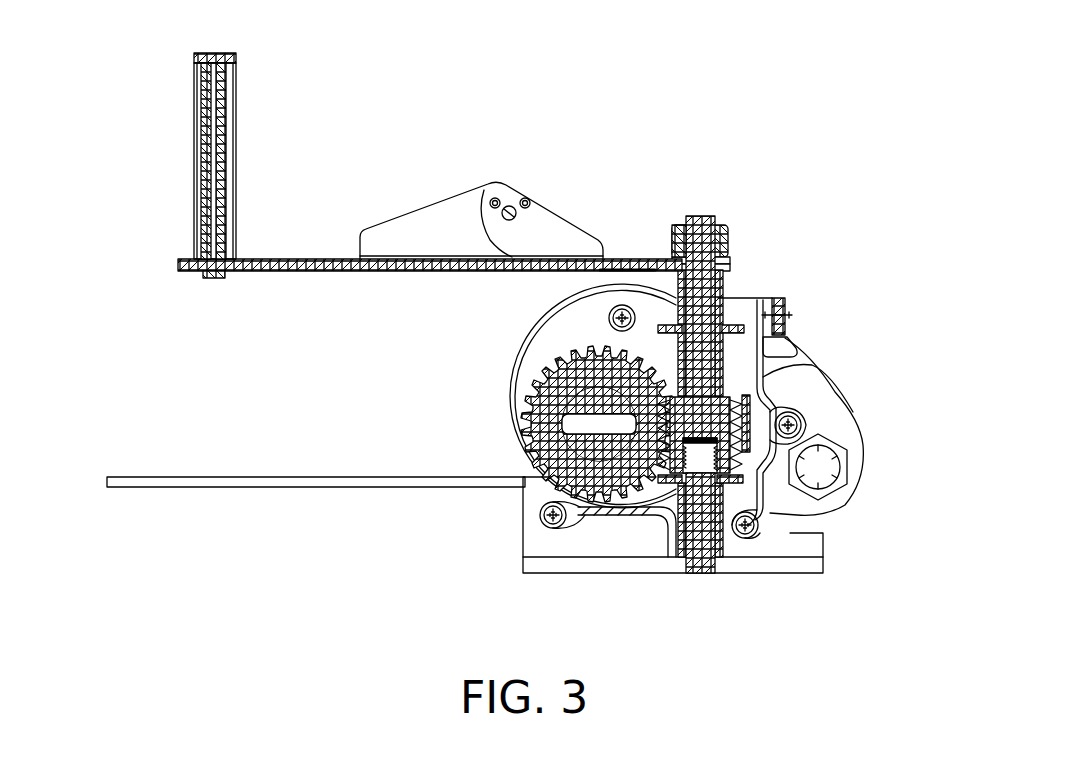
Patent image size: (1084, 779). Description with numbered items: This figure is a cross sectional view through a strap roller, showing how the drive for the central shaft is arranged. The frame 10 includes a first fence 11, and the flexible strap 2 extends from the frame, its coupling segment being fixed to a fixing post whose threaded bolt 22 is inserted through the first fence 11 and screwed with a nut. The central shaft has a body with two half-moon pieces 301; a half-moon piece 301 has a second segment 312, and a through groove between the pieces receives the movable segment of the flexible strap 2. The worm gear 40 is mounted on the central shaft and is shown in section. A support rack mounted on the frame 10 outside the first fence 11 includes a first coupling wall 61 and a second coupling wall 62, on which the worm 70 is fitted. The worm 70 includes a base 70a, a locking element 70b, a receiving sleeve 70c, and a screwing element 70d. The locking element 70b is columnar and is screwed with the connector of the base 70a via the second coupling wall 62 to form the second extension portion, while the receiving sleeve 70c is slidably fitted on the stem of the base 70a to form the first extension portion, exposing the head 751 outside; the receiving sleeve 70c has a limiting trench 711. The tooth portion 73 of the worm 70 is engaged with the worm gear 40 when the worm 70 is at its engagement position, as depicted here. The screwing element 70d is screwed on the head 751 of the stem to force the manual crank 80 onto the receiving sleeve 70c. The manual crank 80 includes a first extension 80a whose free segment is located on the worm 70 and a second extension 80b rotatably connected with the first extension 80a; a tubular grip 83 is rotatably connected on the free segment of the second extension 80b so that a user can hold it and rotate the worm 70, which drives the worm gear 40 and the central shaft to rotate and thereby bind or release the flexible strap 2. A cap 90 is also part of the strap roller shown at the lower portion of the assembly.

The flexible strap 2 is at (167, 478).
The frame 10 is at (522, 540).
The first fence 11 is at (823, 408).
The threaded bolt 22 is at (850, 470).
The worm gear 40 is at (508, 438).
The first coupling wall 61 is at (733, 321).
The second coupling wall 62 is at (800, 513).
The worm 70 is at (711, 382).
The base 70a is at (790, 388).
The locking element 70b is at (699, 550).
The receiving sleeve 70c is at (660, 283).
The screwing element 70d is at (724, 240).
The tooth portion 73 is at (752, 425).
The manual crank 80 is at (153, 149).
The first extension 80a is at (550, 213).
The second extension 80b is at (272, 273).
The tubular grip 83 is at (200, 166).
The cap 90 is at (640, 518).
The half-moon pieces 301 is at (525, 465).
The second segment 312 is at (580, 422).
The limiting trench 711 is at (813, 400).
The head 751 is at (680, 247).